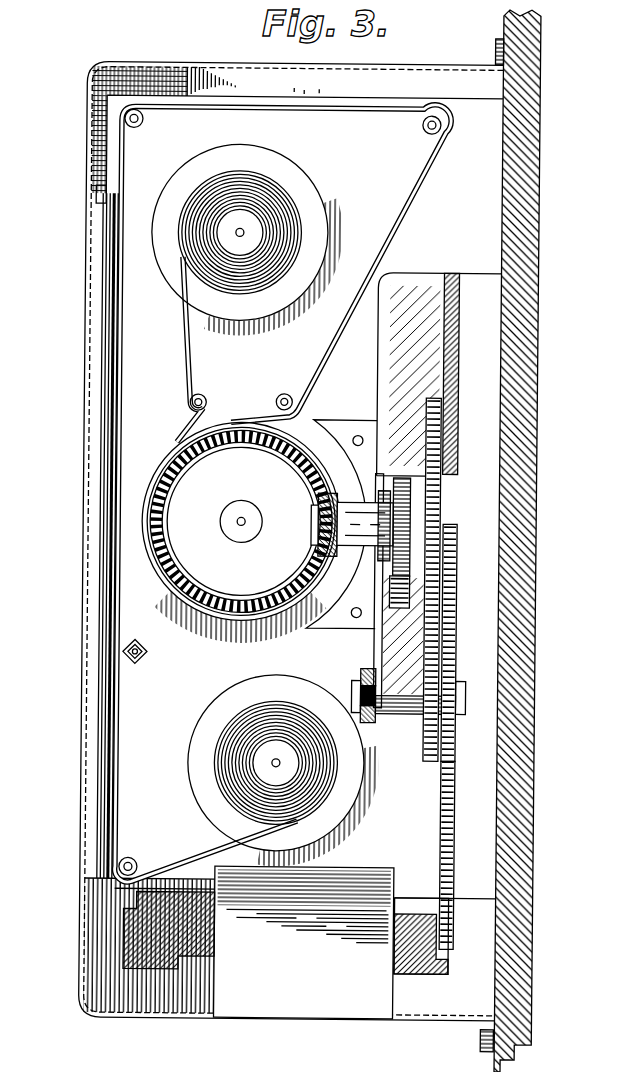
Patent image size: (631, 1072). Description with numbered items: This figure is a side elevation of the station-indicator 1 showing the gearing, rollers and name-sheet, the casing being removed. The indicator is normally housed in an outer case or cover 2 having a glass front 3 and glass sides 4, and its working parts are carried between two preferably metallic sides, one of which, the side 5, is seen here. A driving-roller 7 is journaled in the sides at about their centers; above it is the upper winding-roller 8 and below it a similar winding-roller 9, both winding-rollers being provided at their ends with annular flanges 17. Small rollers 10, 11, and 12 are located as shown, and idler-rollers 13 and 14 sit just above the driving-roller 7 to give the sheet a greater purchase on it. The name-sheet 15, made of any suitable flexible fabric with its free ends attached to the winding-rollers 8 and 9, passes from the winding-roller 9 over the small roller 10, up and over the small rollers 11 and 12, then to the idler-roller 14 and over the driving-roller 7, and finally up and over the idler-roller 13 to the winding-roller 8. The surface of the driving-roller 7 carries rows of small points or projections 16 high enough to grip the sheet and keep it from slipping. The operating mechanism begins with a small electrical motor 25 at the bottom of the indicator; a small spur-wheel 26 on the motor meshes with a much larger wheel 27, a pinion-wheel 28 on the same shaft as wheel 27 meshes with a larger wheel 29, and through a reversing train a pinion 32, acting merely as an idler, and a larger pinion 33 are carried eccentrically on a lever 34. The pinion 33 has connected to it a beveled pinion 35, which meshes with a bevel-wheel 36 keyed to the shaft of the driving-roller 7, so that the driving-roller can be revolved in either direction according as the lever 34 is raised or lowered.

The indicator 1 is at (290, 525).
The outer case 2 is at (84, 138).
The glass front 3 is at (97, 222).
The glass sides 4 is at (180, 918).
The side 5 is at (473, 200).
The driving-roller 7 is at (241, 500).
The upper winding-roller 8 is at (250, 226).
The winding-roller 9 is at (272, 762).
The small roller 10 is at (137, 860).
The small roller 11 is at (138, 126).
The small roller 12 is at (419, 128).
The idler-roller 13 is at (189, 404).
The idler-roller 14 is at (291, 403).
The name-sheet 15 is at (124, 386).
The points or projections 16 is at (241, 428).
The annular flanges 17 is at (209, 156).
The electrical motor 25 is at (289, 1002).
The spur-wheel 26 is at (458, 927).
The wheel 27 is at (458, 774).
The pinion-wheel 28 is at (431, 760).
The wheel 29 is at (460, 616).
The pinion 32 is at (410, 592).
The pinion 33 is at (395, 515).
The lever 34 is at (380, 640).
The beveled pinion 35 is at (316, 528).
The bevel-wheel 36 is at (263, 442).